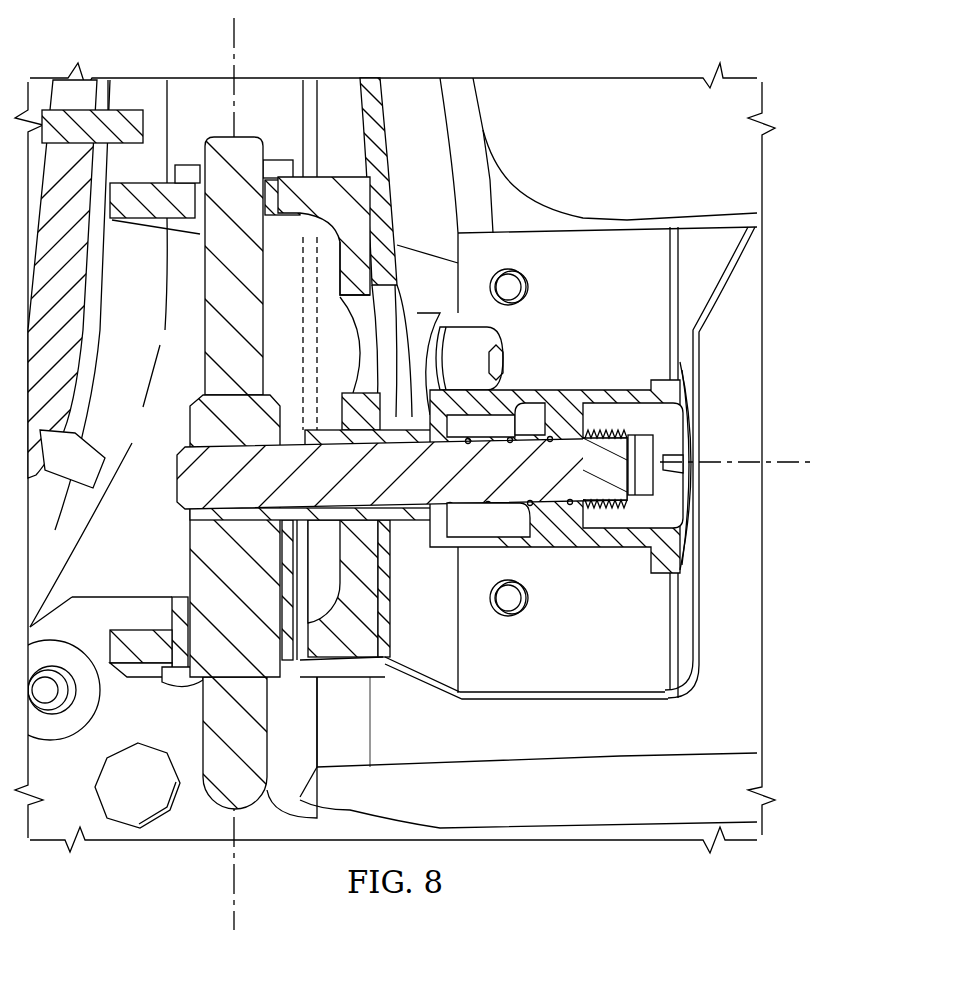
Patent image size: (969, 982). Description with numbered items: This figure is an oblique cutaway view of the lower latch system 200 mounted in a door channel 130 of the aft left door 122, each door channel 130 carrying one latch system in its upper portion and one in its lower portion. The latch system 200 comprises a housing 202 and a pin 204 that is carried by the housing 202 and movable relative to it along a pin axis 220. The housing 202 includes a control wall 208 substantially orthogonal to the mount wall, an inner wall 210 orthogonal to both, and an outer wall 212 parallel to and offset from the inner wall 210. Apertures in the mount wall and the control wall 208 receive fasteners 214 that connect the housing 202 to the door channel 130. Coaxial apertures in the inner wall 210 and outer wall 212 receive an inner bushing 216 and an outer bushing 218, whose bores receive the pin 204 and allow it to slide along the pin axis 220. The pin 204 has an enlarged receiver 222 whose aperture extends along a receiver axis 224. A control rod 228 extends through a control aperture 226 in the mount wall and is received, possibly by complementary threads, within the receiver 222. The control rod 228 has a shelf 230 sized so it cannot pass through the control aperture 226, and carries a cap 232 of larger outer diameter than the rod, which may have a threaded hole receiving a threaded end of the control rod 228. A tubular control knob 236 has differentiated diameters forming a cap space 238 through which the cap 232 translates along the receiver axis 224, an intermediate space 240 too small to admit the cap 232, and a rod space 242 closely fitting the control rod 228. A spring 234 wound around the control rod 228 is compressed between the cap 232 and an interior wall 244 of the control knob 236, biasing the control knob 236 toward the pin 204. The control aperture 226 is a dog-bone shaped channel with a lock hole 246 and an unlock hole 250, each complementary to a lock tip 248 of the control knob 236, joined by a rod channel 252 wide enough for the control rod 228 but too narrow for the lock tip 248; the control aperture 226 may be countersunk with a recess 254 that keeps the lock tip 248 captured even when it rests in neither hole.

The aft left door 122 is at (685, 220).
The door channel 130 is at (473, 108).
The latch system 200 is at (270, 108).
The housing 202 is at (330, 178).
The pin 204 is at (210, 340).
The control wall 208 is at (345, 265).
The inner wall 210 is at (145, 208).
The outer wall 212 is at (135, 645).
The fasteners 214 is at (522, 330).
The inner bushing 216 is at (190, 172).
The outer bushing 218 is at (172, 683).
The pin axis 220 is at (232, 40).
The receiver 222 is at (192, 432).
The receiver axis 224 is at (805, 462).
The control aperture 226 is at (410, 272).
The control rod 228 is at (563, 487).
The shelf 230 is at (332, 697).
The cap 232 is at (683, 443).
The spring 234 is at (547, 430).
The control knob 236 is at (693, 527).
The cap space 238 is at (573, 407).
The intermediate space 240 is at (507, 517).
The rod space 242 is at (400, 512).
The interior wall 244 is at (460, 513).
The lock hole 246 is at (355, 378).
The lock tip 248 is at (303, 704).
The unlock hole 250 is at (360, 328).
The rod channel 252 is at (360, 420).
The recess 254 is at (403, 420).